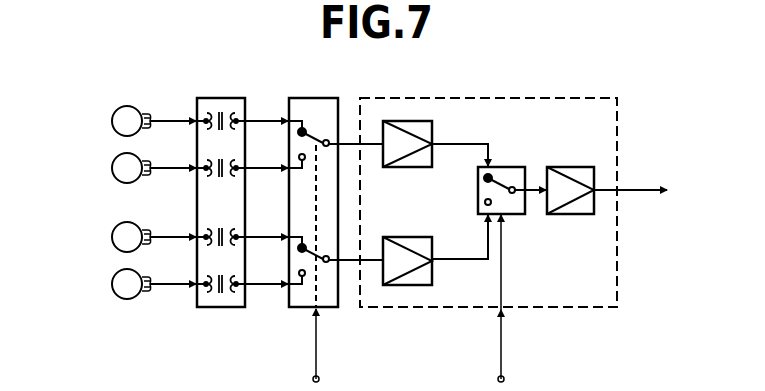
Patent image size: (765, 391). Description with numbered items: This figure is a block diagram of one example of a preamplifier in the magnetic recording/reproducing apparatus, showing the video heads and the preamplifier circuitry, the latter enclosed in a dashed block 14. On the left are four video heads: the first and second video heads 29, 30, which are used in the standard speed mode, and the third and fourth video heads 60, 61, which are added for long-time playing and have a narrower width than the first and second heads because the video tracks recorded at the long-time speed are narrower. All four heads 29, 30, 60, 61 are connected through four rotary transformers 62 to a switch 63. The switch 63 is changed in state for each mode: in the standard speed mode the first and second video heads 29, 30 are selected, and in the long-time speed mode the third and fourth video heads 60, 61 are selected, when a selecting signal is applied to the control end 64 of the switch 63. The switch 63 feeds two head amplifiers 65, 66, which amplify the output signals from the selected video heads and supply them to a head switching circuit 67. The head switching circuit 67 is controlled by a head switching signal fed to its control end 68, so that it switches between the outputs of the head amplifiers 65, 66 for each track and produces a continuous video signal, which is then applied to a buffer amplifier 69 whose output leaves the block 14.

The first video head 29 is at (127, 105).
The third video head 60 is at (113, 159).
The second video head 30 is at (113, 230).
The fourth video head 61 is at (113, 276).
The rotary transformers 62 is at (222, 309).
The switch 63 is at (325, 97).
The control end 64 is at (319, 378).
The signal processing unit 14 is at (570, 97).
The head amplifier 65 is at (405, 168).
The head amplifier 66 is at (400, 236).
The head switching circuit 67 is at (510, 166).
The control end 68 is at (504, 377).
The buffer amplifier 69 is at (577, 166).